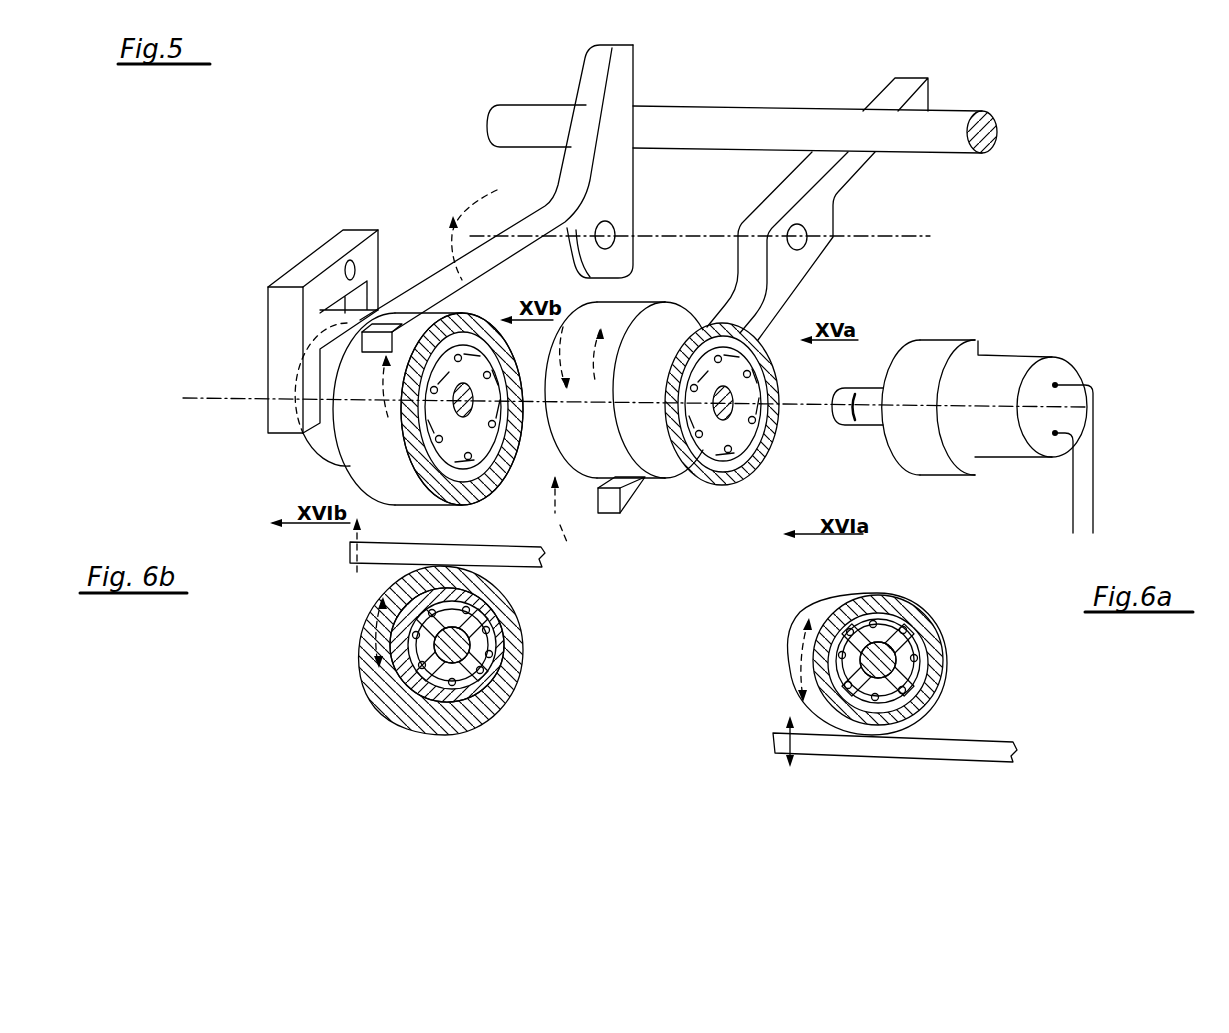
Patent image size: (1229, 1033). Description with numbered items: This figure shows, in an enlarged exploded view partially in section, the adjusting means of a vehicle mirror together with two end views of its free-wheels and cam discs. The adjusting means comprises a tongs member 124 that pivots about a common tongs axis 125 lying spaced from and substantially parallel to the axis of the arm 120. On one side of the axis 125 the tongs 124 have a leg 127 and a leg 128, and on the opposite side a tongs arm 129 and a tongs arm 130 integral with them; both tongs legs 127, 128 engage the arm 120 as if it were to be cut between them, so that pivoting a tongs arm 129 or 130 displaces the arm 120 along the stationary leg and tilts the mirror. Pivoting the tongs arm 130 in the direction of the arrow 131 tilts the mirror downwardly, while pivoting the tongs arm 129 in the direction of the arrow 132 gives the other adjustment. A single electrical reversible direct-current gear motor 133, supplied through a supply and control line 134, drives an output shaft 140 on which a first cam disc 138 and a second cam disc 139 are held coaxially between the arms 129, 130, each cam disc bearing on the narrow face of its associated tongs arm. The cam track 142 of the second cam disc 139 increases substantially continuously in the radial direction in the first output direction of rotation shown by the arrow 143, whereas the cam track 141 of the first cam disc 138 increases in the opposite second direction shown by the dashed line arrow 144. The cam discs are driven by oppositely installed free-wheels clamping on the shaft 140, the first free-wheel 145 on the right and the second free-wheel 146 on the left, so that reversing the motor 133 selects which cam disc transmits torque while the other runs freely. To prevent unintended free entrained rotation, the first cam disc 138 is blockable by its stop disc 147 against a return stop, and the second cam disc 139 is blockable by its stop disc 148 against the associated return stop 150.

In FIG. 5, the arm 120 is at (752, 120).
In FIG. 5, the tongs member 124 is at (746, 196).
In FIG. 5, the common tongs axis 125 is at (905, 237).
In FIG. 5, the tongs leg 127 is at (633, 103).
In FIG. 5, the tongs leg 128 is at (907, 93).
In FIG. 5, the tongs arm 129 is at (397, 324).
In FIG. 6B, the tongs arm 129 is at (527, 562).
In FIG. 5, the tongs arm 130 is at (607, 513).
In FIG. 6A, the tongs arm 130 is at (957, 745).
In FIG. 5, the arrow 131 is at (553, 509).
In FIG. 6A, the arrow 131 is at (788, 734).
In FIG. 5, the arrow 132 is at (488, 198).
In FIG. 6B, the arrow 132 is at (348, 552).
In FIG. 5, the electrical reversible direct-current gear motor 133 is at (937, 473).
In FIG. 5, the supply and control line 134 is at (1073, 487).
In FIG. 5, the first cam disc 138 is at (613, 298).
In FIG. 6A, the first cam disc 138 is at (792, 655).
In FIG. 5, the second cam disc 139 is at (397, 492).
In FIG. 6B, the second cam disc 139 is at (403, 715).
In FIG. 5, the output shaft 140 is at (745, 422).
In FIG. 6B, the output shaft 140 is at (470, 653).
In FIG. 6A, the output shaft 140 is at (932, 668).
In FIG. 6A, the cam track 141 is at (792, 642).
In FIG. 6B, the cam track 142 is at (363, 623).
In FIG. 5, the arrow 143 is at (357, 389).
In FIG. 6B, the arrow 143 is at (380, 658).
In FIG. 6A, the arrow 143 is at (928, 655).
In FIG. 5, the dashed line arrow 144 is at (383, 382).
In FIG. 6B, the dashed line arrow 144 is at (373, 600).
In FIG. 6A, the dashed line arrow 144 is at (808, 640).
In FIG. 5, the first free-wheel 145 is at (723, 478).
In FIG. 6A, the first free-wheel 145 is at (893, 623).
In FIG. 5, the second free-wheel 146 is at (467, 466).
In FIG. 6B, the second free-wheel 146 is at (448, 683).
In FIG. 5, the stop disc 147 is at (765, 438).
In FIG. 6A, the stop disc 147 is at (912, 650).
In FIG. 5, the stop disc 148 is at (312, 443).
In FIG. 6B, the stop disc 148 is at (522, 643).
In FIG. 5, the return stop 150 is at (299, 270).